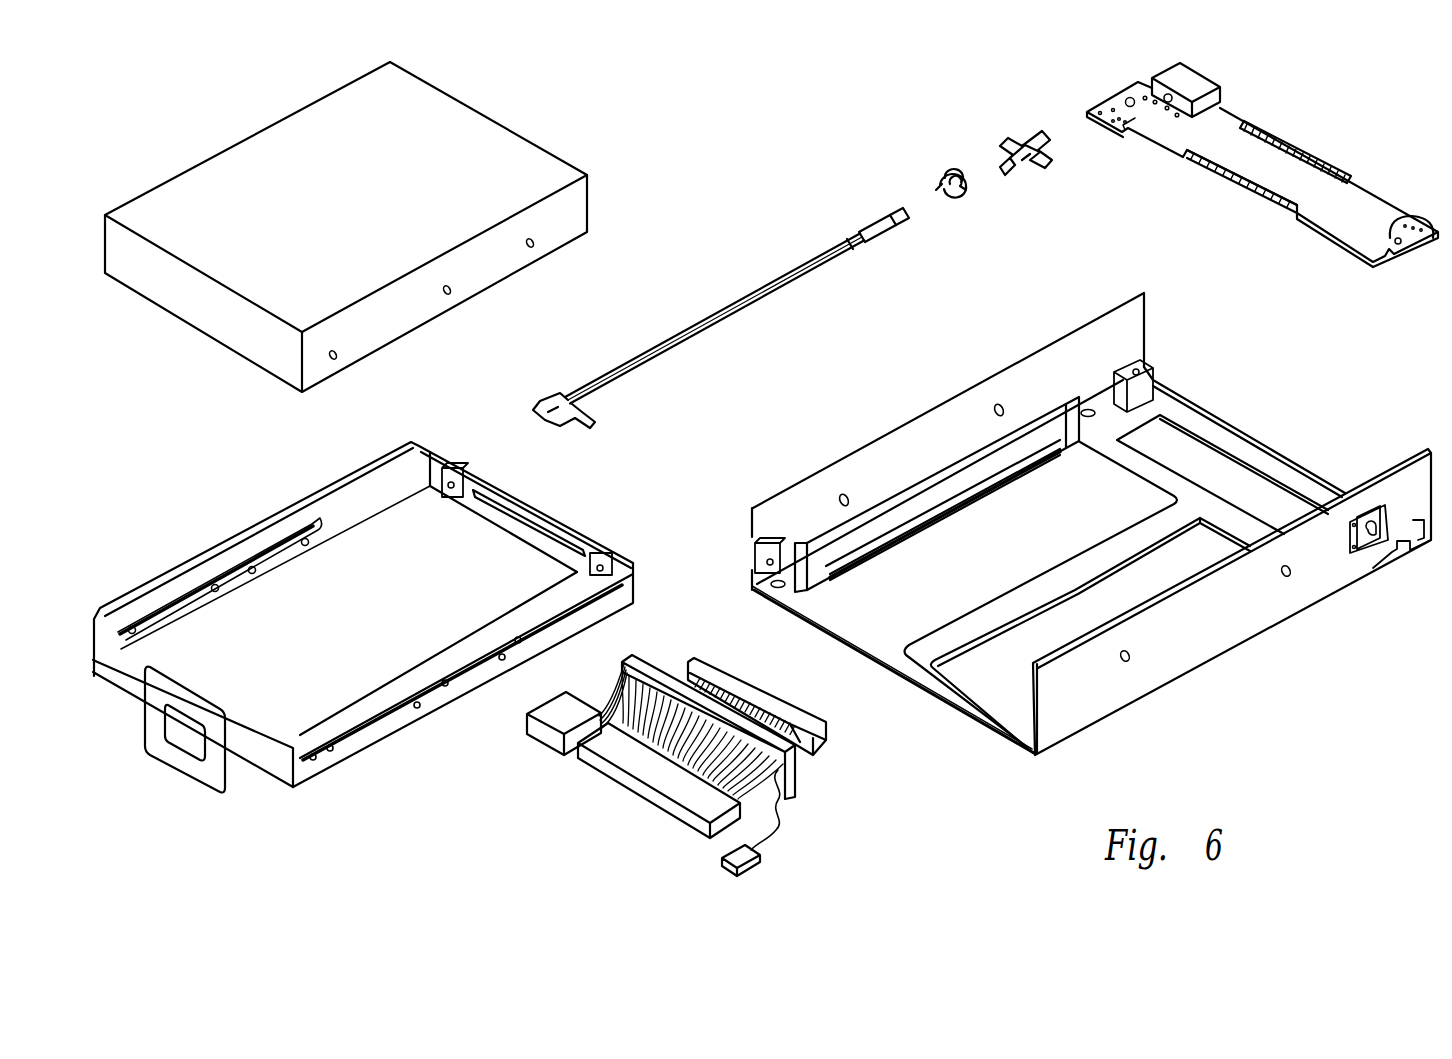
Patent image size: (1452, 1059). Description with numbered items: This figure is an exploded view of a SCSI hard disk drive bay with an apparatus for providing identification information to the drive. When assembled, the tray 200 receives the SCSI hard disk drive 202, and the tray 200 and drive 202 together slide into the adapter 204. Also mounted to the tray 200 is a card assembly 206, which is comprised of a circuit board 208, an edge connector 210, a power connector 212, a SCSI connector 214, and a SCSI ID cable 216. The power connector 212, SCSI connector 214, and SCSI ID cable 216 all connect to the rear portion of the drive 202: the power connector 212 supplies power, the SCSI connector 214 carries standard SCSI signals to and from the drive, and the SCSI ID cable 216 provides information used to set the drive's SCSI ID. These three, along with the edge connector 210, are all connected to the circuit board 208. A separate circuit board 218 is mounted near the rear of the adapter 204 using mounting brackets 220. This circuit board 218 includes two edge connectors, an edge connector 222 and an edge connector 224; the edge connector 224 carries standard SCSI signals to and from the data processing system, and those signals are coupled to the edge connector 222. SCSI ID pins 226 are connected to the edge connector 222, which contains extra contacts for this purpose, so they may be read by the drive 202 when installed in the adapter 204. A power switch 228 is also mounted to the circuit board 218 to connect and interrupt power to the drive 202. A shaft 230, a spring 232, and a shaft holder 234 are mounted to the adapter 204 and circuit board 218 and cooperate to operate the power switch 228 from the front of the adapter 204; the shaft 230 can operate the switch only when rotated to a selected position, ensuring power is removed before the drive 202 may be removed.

The tray 200 is at (390, 735).
The SCSI hard disk drive 202 is at (523, 138).
The adapter 204 is at (1091, 524).
The card assembly 206 is at (713, 756).
The circuit board 208 is at (633, 658).
The edge connector 210 is at (757, 676).
The power connector 212 is at (550, 745).
The SCSI connector 214 is at (650, 800).
The SCSI ID cable 216 is at (757, 873).
The circuit board 218 is at (1267, 201).
The mounting brackets 220 is at (1166, 369).
The edge connector 222 is at (1223, 192).
The edge connector 224 is at (1307, 157).
The SCSI ID pins 226 is at (1445, 177).
The power switch 228 is at (1212, 82).
The shaft 230 is at (730, 300).
The spring 232 is at (950, 175).
The shaft holder 234 is at (1013, 140).